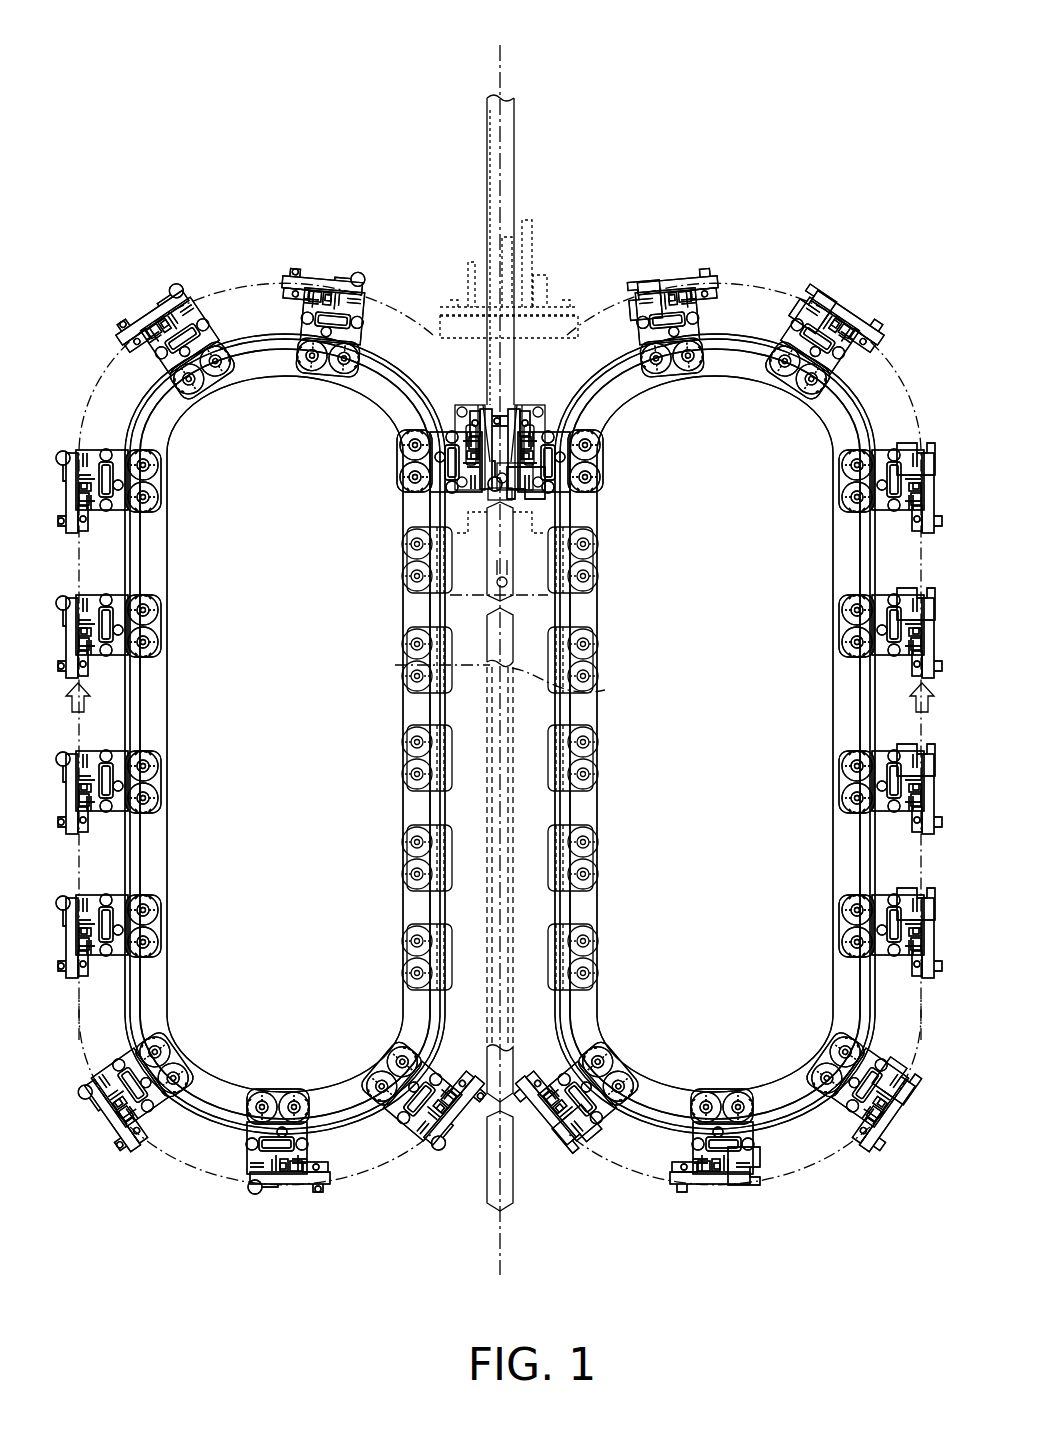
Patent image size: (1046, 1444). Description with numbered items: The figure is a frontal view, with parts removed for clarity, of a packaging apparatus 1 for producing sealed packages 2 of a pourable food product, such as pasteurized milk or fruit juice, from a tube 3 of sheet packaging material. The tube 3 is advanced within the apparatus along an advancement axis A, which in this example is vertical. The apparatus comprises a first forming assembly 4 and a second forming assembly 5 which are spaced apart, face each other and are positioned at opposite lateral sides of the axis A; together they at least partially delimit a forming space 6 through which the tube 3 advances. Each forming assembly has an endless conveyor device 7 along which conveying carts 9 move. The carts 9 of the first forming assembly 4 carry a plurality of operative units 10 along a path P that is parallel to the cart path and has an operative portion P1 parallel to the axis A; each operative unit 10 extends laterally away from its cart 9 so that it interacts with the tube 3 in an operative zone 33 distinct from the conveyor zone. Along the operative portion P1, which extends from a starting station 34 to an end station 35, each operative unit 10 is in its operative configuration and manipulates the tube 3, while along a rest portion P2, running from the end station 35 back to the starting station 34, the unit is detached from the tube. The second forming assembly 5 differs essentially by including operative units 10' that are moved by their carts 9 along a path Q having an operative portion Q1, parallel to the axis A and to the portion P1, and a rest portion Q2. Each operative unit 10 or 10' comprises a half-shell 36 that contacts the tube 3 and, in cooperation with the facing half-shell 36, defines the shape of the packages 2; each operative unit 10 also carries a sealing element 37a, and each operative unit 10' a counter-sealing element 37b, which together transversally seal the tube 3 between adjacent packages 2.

The packaging apparatus 1 is at (306, 160).
The sealed packages 2 is at (508, 522).
The tube 3 is at (508, 148).
The first forming assembly 4 is at (254, 280).
The second forming assembly 5 is at (796, 266).
The forming space 6 is at (526, 604).
The endless conveyor device 7 is at (190, 1130).
The conveying carts 9 is at (222, 394).
The operative units 10 is at (273, 757).
The operative units 10' is at (733, 701).
The operative zone 33 is at (476, 690).
The starting station 34 is at (488, 492).
The end station 35 is at (478, 1000).
The half-shell 36 is at (166, 312).
The sealing element 37a is at (166, 292).
The counter-sealing element 37b is at (634, 300).
The advancement axis A is at (502, 80).
The path P is at (250, 274).
The path Q is at (748, 345).
The operative portion P1 is at (421, 661).
The rest portion P2 is at (63, 1058).
The operative portion Q1 is at (586, 685).
The rest portion Q2 is at (939, 1069).